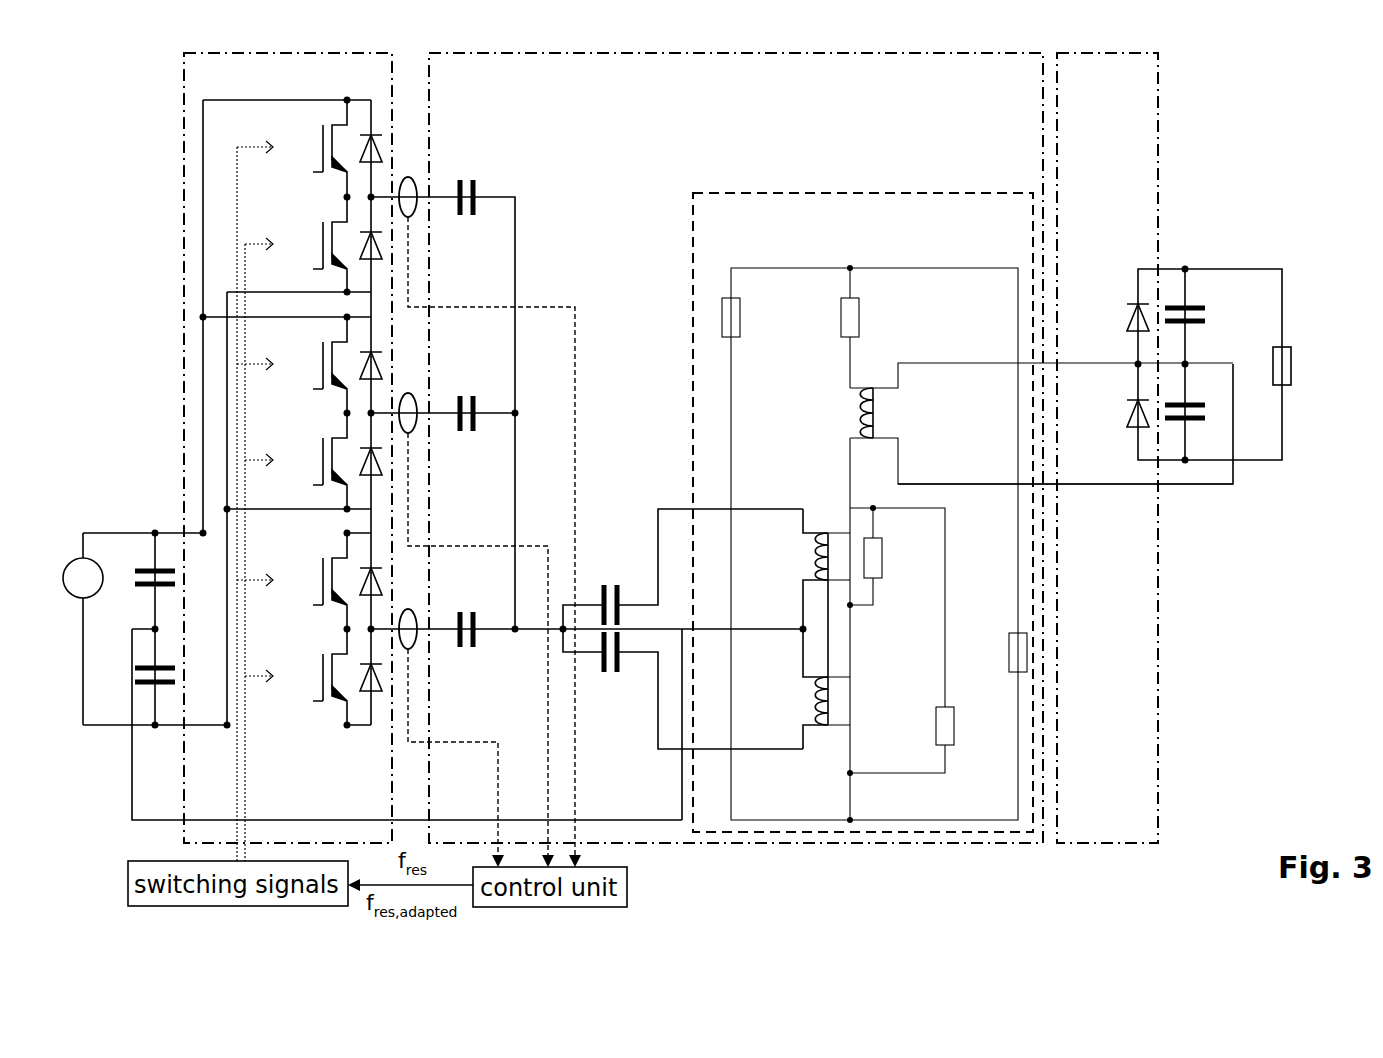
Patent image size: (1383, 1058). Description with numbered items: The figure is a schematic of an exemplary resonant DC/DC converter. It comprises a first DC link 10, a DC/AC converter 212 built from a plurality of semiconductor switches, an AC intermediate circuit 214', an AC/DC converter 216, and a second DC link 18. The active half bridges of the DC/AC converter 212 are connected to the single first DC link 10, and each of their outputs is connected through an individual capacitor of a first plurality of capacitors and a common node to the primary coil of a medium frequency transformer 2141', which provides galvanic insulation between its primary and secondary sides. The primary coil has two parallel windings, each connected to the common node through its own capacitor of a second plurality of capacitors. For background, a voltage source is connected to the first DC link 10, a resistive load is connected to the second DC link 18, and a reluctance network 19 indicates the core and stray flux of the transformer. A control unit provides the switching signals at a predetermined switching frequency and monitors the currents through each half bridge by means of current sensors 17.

The first DC link 10 is at (155, 558).
The current sensors 17 is at (413, 598).
The second DC link 18 is at (1185, 440).
The reluctance network 19 is at (903, 268).
The DC/AC converter 212 is at (248, 91).
The AC intermediate circuit 214' is at (811, 460).
The medium frequency transformer 2141' is at (972, 458).
The AC/DC converter 216 is at (1121, 91).